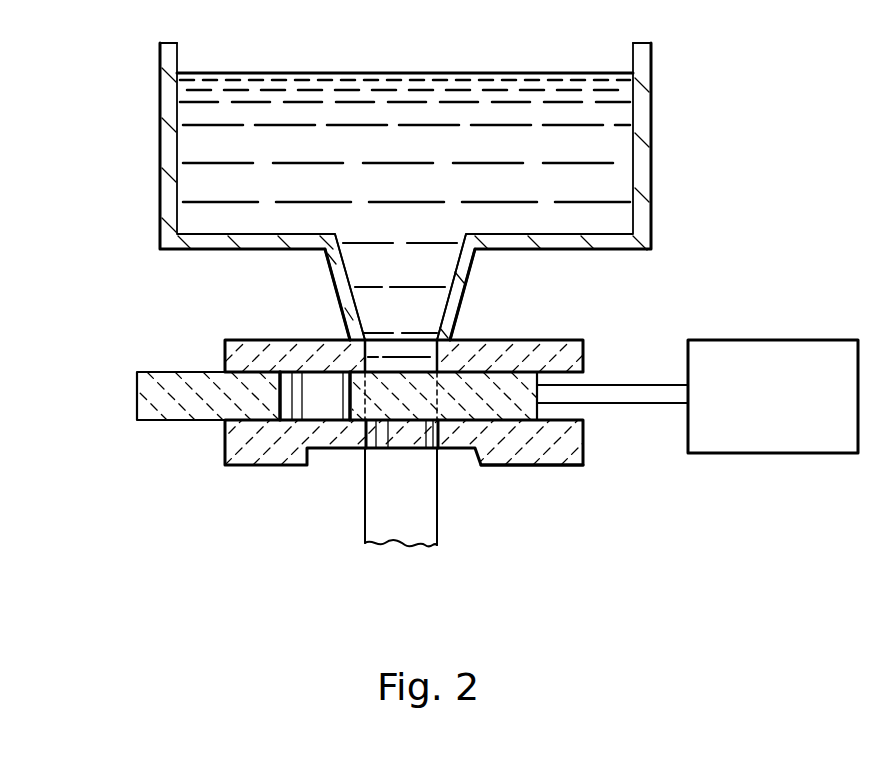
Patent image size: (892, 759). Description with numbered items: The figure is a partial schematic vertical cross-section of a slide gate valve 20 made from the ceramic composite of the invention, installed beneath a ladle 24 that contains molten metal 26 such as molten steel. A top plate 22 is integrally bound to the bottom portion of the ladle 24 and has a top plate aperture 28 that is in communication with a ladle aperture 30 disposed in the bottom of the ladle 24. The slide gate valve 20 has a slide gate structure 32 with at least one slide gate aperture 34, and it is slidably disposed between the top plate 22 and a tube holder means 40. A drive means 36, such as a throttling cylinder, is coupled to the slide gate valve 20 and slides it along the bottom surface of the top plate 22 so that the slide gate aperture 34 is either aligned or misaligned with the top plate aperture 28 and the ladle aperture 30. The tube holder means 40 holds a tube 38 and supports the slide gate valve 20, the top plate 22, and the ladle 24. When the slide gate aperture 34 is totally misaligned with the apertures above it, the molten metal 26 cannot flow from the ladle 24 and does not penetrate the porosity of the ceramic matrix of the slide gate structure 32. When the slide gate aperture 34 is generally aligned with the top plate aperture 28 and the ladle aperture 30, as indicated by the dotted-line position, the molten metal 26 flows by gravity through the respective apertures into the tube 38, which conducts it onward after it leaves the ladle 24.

The slide gate valve 20 is at (199, 427).
The top plate 22 is at (553, 358).
The ladle 24 is at (152, 122).
The molten metal 26 is at (558, 117).
The top plate aperture 28 is at (403, 350).
The ladle aperture 30 is at (430, 278).
The slide gate structure 32 is at (155, 400).
The slide gate aperture 34 is at (323, 400).
The drive means 36 is at (763, 373).
The tube 38 is at (408, 528).
The tube holder means 40 is at (547, 485).